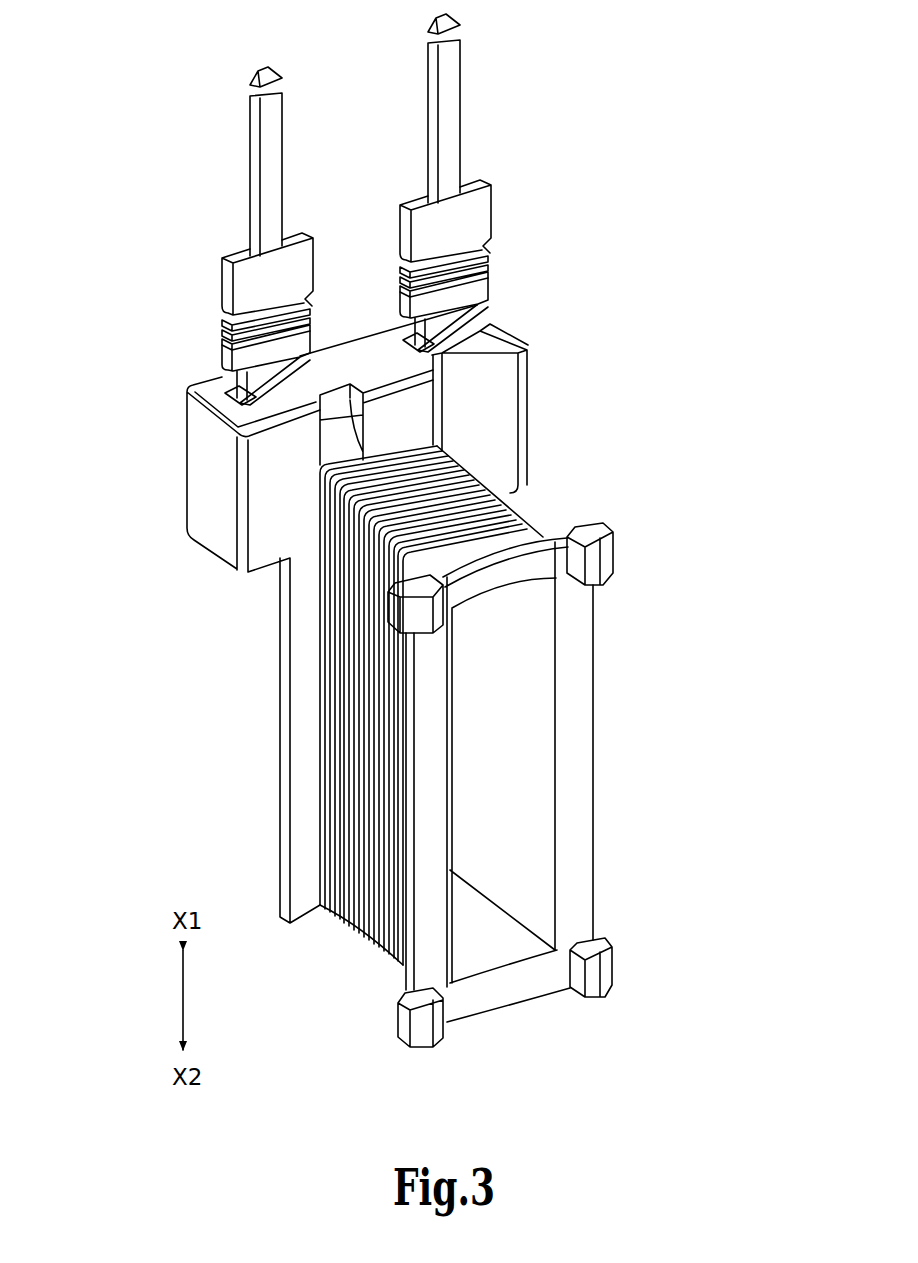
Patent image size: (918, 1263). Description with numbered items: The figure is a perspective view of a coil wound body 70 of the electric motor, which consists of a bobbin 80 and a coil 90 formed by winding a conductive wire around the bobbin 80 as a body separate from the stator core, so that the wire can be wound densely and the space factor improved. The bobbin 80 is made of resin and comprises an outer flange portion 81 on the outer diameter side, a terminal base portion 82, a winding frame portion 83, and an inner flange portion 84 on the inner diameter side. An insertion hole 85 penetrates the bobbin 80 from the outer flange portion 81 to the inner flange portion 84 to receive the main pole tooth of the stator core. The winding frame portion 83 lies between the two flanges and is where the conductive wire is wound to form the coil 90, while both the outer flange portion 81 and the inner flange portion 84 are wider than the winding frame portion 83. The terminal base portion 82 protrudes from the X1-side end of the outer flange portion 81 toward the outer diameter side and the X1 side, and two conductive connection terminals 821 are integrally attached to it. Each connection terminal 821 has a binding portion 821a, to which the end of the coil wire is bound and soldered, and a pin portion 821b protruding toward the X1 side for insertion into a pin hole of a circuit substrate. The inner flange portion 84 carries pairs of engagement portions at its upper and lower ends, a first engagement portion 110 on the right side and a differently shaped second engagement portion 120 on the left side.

The coil wound body 70 is at (623, 222).
The bobbin 80 is at (252, 783).
The outer flange portion 81 is at (304, 596).
The terminal base portion 82 is at (353, 362).
The connection terminal 821 is at (213, 188).
The binding portion 821a is at (268, 347).
The pin portion 821b is at (273, 130).
The winding frame portion 83 is at (520, 499).
The inner flange portion 84 is at (578, 742).
The insertion hole 85 is at (478, 936).
The coil 90 is at (490, 540).
The first engagement portion 110 is at (612, 564).
The second engagement portion 120 is at (418, 612).